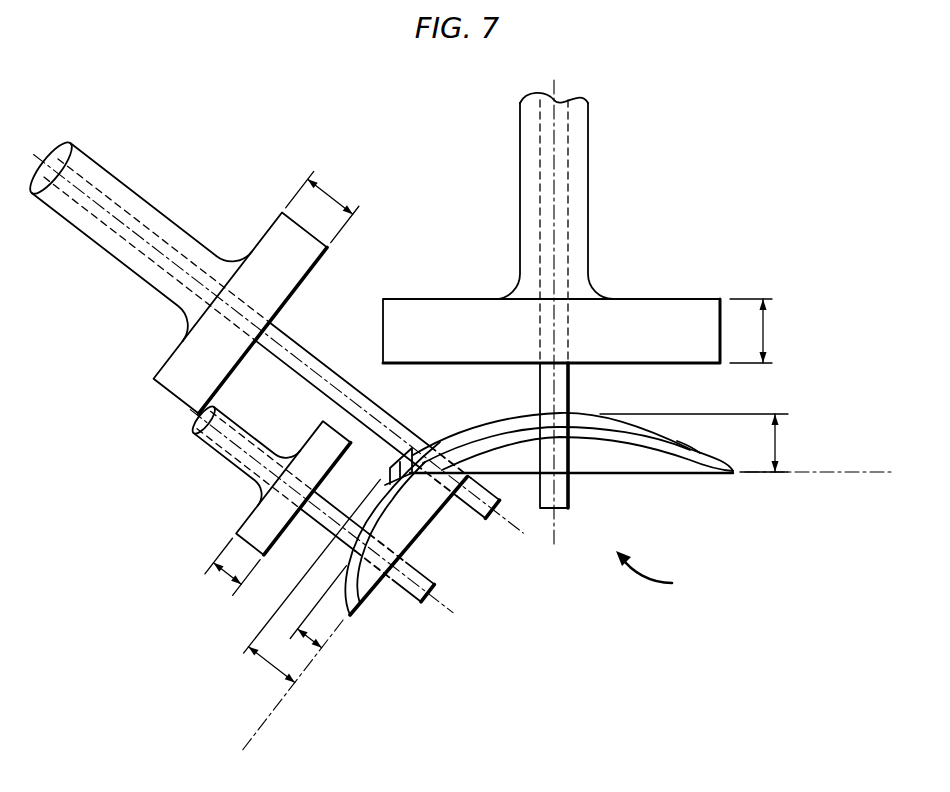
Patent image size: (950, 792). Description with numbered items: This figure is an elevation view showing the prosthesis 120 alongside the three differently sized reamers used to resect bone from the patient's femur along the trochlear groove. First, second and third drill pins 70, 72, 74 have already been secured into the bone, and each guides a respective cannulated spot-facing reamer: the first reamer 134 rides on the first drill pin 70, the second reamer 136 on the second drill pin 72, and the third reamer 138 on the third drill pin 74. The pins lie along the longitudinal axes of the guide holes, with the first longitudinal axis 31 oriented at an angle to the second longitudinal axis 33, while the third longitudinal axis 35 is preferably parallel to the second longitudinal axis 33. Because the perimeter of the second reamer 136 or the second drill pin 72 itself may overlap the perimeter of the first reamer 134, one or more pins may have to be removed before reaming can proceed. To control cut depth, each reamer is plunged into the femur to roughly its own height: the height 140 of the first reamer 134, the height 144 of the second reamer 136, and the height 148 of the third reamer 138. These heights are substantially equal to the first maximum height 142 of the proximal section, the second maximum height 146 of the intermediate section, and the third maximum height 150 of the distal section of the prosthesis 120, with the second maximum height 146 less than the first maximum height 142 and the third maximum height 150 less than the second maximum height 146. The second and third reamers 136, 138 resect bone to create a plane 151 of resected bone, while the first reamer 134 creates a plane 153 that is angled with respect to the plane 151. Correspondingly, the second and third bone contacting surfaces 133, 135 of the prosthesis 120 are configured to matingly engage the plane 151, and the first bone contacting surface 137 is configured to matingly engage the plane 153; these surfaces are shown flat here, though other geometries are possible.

The first longitudinal axis 31 is at (553, 138).
The second longitudinal axis 33 is at (92, 203).
The third longitudinal axis 35 is at (240, 446).
The first drill pin 70 is at (571, 397).
The second drill pin 72 is at (307, 350).
The third drill pin 74 is at (324, 526).
The prosthesis 120 is at (664, 573).
The second bone contacting surface 133 is at (372, 600).
The first cannulated spot-facing reamer 134 is at (589, 212).
The third bone contacting surface 135 is at (429, 525).
The second cannulated spot-facing reamer 136 is at (137, 270).
The first bone contacting surface 137 is at (612, 474).
The third cannulated spot-facing reamer 138 is at (233, 470).
The height of first reamer 140 is at (766, 334).
The first maximum height 142 is at (780, 447).
The height of second reamer 144 is at (331, 198).
The second maximum height 146 is at (272, 664).
The height of third reamer 148 is at (223, 578).
The third maximum height 150 is at (310, 647).
The plane of resected bone 151 is at (265, 722).
The plane 153 is at (841, 473).